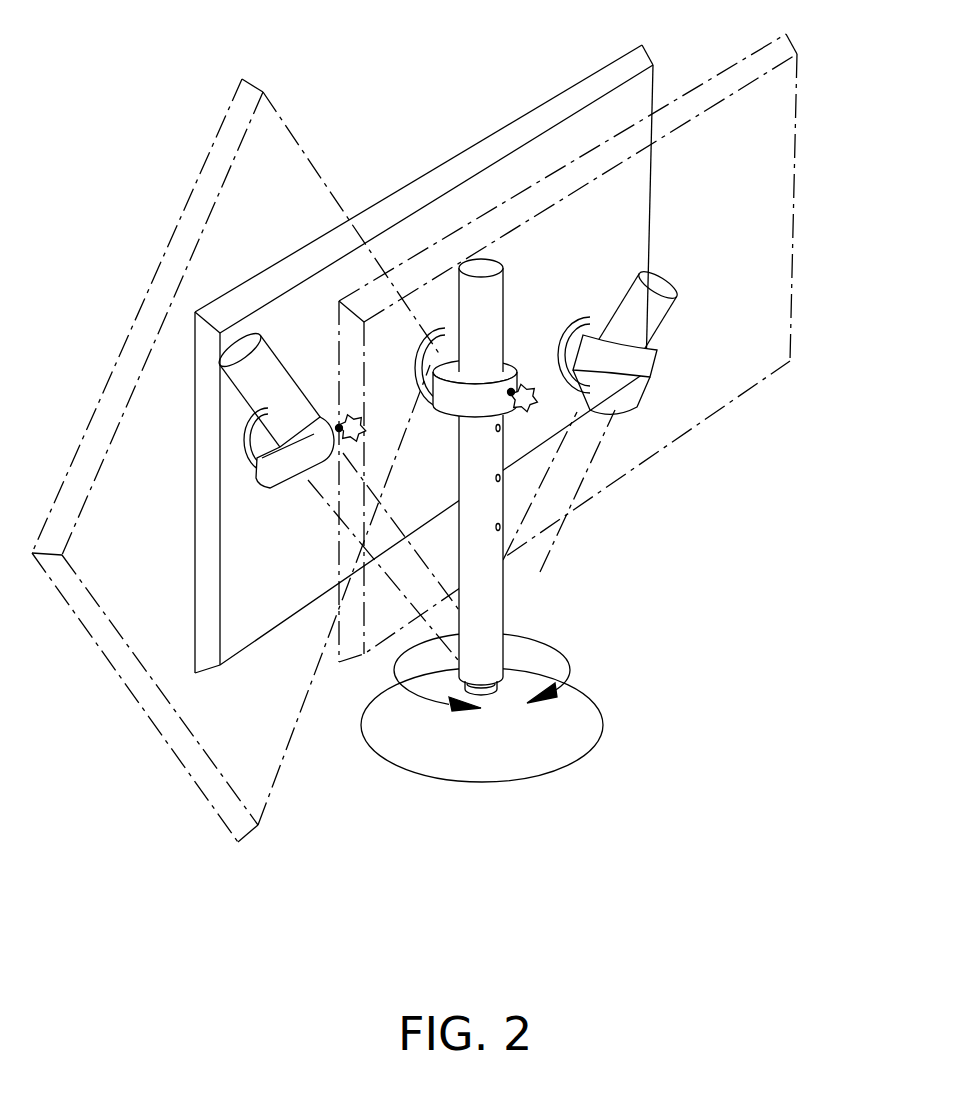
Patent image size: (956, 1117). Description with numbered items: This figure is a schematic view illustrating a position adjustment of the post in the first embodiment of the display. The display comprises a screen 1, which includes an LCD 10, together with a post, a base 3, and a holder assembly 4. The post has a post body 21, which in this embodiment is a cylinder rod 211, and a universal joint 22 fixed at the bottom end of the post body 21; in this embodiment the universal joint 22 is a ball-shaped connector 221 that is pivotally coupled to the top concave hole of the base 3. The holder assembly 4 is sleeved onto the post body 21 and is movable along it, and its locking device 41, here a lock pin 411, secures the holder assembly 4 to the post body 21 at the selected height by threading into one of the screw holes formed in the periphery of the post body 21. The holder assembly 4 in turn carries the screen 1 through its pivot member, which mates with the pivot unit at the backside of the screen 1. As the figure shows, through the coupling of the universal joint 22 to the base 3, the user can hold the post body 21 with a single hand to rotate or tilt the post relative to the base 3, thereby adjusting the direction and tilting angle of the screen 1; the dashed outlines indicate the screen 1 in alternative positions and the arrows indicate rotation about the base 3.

The screen 1 is at (424, 342).
The LCD 10 is at (585, 92).
The post body 21 is at (568, 472).
The cylinder rod 211 is at (497, 590).
The universal joint 22 is at (570, 655).
The ball-shaped connector 221 is at (500, 683).
The base 3 is at (588, 703).
The holder assembly 4 is at (483, 413).
The locking device 41 is at (545, 445).
The lock pin 411 is at (533, 407).